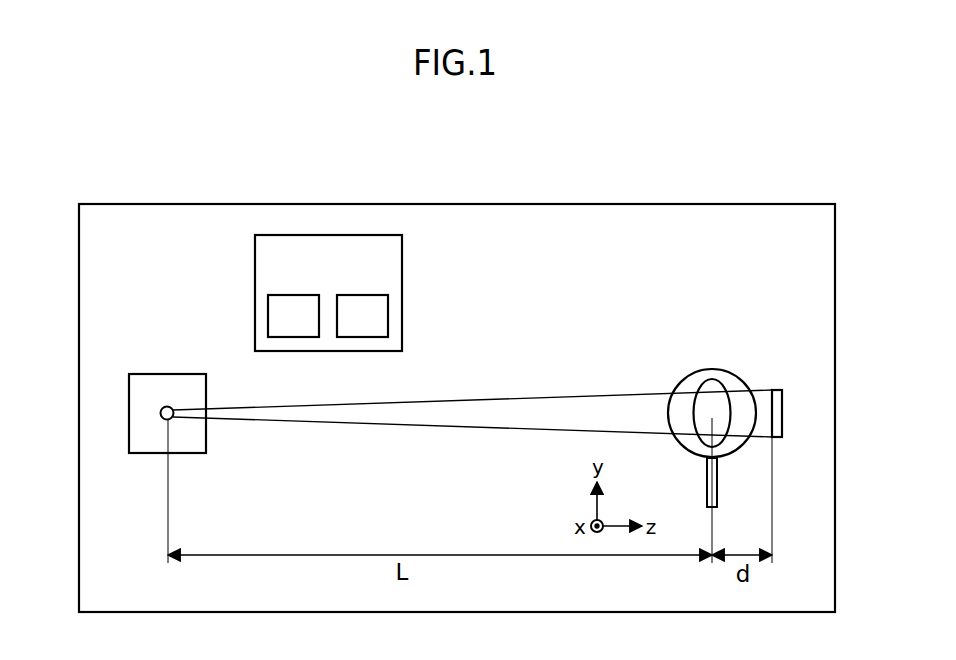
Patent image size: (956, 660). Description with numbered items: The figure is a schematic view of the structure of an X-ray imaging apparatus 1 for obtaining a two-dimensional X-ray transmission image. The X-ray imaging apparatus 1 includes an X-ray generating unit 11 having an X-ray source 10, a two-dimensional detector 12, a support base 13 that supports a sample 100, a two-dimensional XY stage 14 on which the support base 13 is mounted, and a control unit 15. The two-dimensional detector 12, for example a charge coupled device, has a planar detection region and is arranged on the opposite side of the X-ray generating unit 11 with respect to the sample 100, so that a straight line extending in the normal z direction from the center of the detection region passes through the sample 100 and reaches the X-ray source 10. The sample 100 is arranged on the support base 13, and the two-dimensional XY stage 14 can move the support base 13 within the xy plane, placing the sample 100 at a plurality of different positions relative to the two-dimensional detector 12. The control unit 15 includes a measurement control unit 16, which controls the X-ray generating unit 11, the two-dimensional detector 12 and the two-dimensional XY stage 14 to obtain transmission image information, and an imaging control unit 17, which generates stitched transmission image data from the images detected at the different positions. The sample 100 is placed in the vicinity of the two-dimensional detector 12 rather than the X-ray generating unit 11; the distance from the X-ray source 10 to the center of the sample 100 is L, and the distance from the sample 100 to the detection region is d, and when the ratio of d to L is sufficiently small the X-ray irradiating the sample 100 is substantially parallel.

The X-ray imaging apparatus 1 is at (480, 192).
The X-ray source 10 is at (167, 405).
The X-ray generating unit 11 is at (147, 454).
The two-dimensional detector 12 is at (777, 390).
The support base 13 is at (724, 372).
The two-dimensional XY stage 14 is at (707, 478).
The control unit 15 is at (281, 277).
The measurement control unit 16 is at (280, 329).
The imaging control unit 17 is at (349, 329).
The sample 100 is at (705, 384).